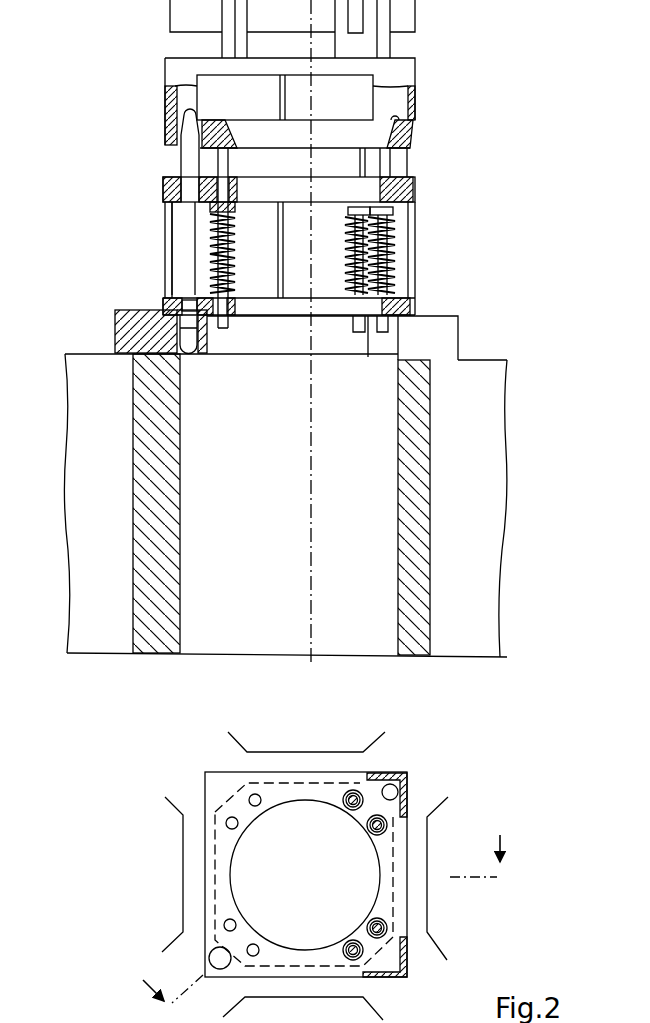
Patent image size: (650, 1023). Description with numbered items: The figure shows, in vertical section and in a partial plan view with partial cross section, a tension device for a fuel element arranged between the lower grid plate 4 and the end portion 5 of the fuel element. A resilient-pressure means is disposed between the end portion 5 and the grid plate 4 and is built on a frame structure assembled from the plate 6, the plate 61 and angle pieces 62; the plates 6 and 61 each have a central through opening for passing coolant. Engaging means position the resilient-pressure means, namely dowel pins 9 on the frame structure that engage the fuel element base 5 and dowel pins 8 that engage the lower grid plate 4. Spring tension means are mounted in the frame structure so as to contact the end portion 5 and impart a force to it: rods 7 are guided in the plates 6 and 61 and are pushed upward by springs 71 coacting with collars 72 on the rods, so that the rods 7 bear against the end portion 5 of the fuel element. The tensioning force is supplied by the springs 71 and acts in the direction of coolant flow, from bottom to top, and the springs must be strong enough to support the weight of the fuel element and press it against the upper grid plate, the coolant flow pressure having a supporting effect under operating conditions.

In FIG. 2a, the lower grid plate 4 is at (487, 630).
In FIG. 2, the lower grid plate 4 is at (185, 775).
In FIG. 2a, the end portion of the fuel element 5 is at (402, 70).
In FIG. 2a, the plate 6 is at (413, 183).
In FIG. 2a, the rod 7 is at (223, 158).
In FIG. 2, the rod 7 is at (368, 826).
In FIG. 2a, the dowel pin 8 is at (192, 355).
In FIG. 2a, the dowel pin 9 is at (192, 165).
In FIG. 2, the dowel pin 9 is at (395, 790).
In FIG. 2a, the plate 61 is at (412, 310).
In FIG. 2a, the angle piece 62 is at (167, 271).
In FIG. 2, the angle piece 62 is at (398, 773).
In FIG. 2a, the spring 71 is at (210, 243).
In FIG. 2a, the collar 72 is at (210, 207).